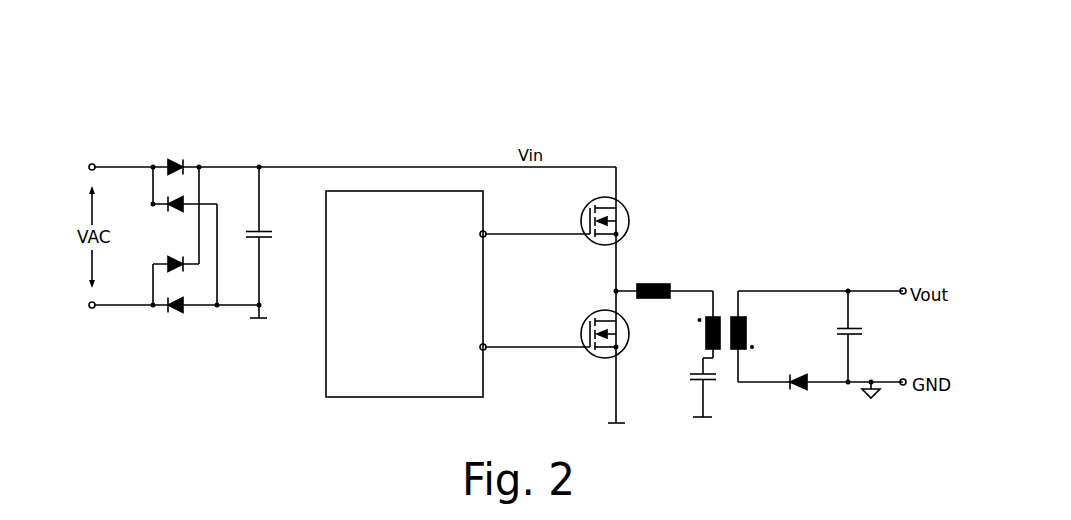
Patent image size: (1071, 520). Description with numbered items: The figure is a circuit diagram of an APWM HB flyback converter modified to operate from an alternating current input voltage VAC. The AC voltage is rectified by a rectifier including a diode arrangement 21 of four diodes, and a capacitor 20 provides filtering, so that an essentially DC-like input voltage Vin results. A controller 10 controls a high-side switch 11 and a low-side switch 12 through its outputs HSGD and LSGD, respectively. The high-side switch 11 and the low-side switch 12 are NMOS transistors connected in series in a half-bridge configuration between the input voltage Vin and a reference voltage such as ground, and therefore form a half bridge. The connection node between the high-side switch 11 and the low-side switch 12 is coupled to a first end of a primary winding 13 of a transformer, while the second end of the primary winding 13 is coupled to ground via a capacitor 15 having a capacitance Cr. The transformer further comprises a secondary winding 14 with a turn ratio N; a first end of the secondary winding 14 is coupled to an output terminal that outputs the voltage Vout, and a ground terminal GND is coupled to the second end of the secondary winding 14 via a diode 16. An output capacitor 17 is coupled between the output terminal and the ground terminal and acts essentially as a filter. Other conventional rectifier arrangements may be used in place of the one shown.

The controller 10 is at (390, 190).
The high-side switch 11 is at (620, 208).
The low-side switch 12 is at (598, 315).
The primary winding 13 is at (698, 320).
The secondary winding 14 is at (747, 329).
The capacitor 15 is at (708, 382).
The diode 16 is at (800, 375).
The output capacitor 17 is at (853, 329).
The capacitor 20 is at (263, 233).
The diode arrangement 21 is at (178, 108).